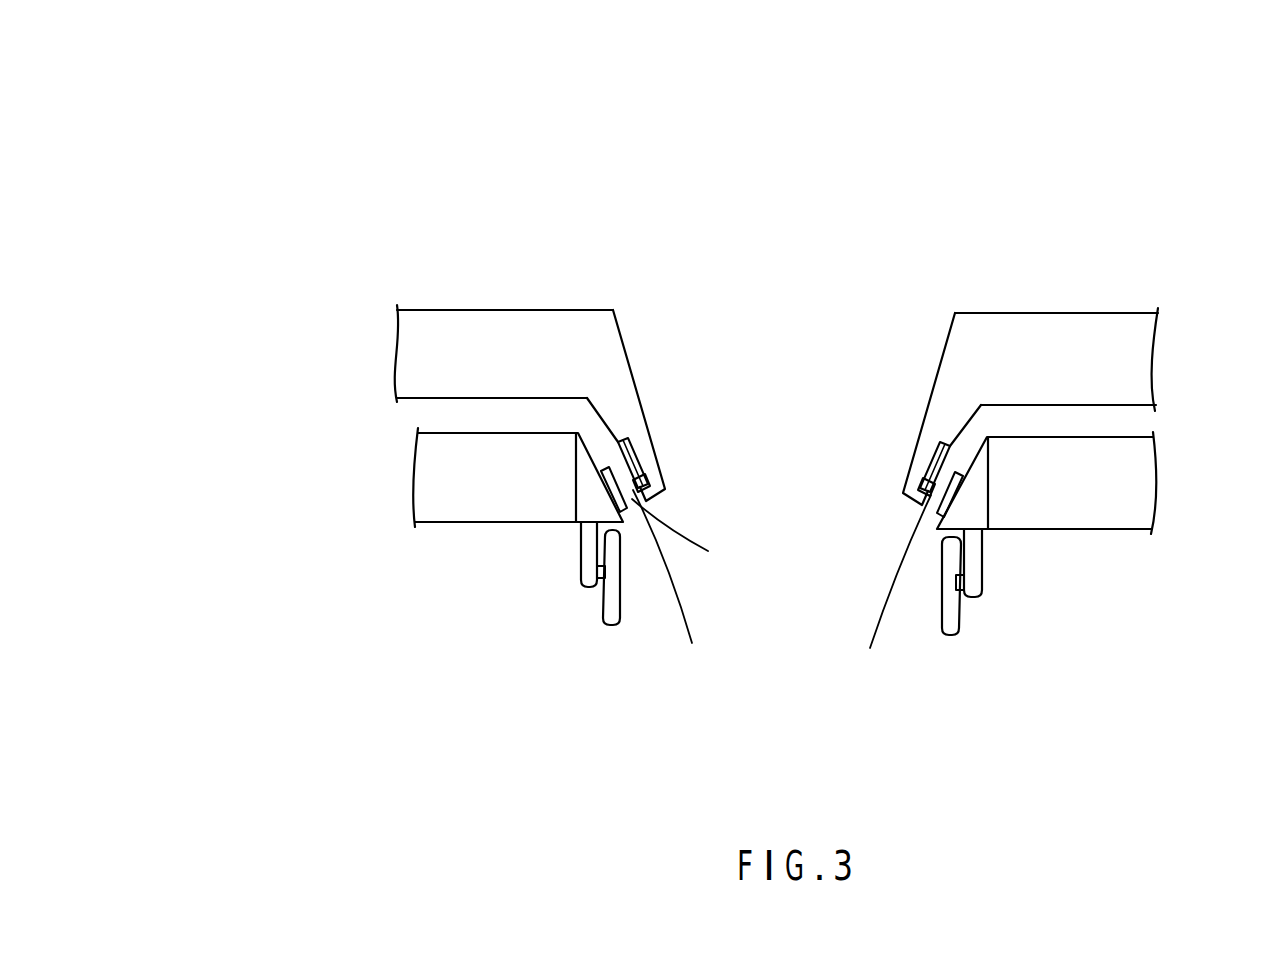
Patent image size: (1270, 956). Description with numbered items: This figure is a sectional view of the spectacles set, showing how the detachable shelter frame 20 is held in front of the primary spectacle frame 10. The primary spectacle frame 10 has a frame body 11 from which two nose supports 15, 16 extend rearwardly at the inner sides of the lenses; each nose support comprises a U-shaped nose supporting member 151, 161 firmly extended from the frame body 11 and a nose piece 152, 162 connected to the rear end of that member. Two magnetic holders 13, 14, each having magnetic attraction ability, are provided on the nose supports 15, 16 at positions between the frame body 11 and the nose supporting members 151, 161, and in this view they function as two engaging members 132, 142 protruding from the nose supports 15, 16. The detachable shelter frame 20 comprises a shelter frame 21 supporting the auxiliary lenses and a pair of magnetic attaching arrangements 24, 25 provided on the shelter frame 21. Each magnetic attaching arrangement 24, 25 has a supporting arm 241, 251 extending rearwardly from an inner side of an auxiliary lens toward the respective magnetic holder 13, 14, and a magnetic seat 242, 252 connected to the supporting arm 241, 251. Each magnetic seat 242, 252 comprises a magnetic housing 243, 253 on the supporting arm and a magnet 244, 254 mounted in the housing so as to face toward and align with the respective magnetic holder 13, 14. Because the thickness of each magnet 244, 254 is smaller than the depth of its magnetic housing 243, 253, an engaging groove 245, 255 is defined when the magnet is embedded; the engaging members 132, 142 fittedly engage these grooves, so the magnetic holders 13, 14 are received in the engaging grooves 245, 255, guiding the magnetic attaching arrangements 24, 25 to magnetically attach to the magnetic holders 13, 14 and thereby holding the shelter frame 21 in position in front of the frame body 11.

The primary spectacle frame 10 is at (388, 700).
The frame body 11 is at (460, 507).
The magnetic holder 13 is at (700, 677).
The engaging member 132 is at (673, 582).
The magnetic holder 14 is at (867, 675).
The engaging member 142 is at (886, 584).
The nose support 15 is at (541, 667).
The nose supporting member 151 is at (590, 502).
The nose piece 152 is at (610, 628).
The nose support 16 is at (1093, 658).
The nose supporting member 161 is at (970, 507).
The nose piece 162 is at (955, 633).
The detachable shelter frame 20 is at (1085, 140).
The shelter frame 21 is at (495, 322).
The magnetic attaching arrangement 24 is at (737, 270).
The supporting arm 241 is at (607, 407).
The magnetic seat 242 is at (760, 400).
The magnetic housing 243 is at (630, 443).
The magnet 244 is at (667, 477).
The engaging groove 245 is at (694, 537).
The magnetic attaching arrangement 25 is at (898, 230).
The supporting arm 251 is at (960, 393).
The magnetic seat 252 is at (830, 403).
The magnetic housing 253 is at (937, 443).
The magnet 254 is at (899, 481).
The engaging groove 255 is at (937, 509).